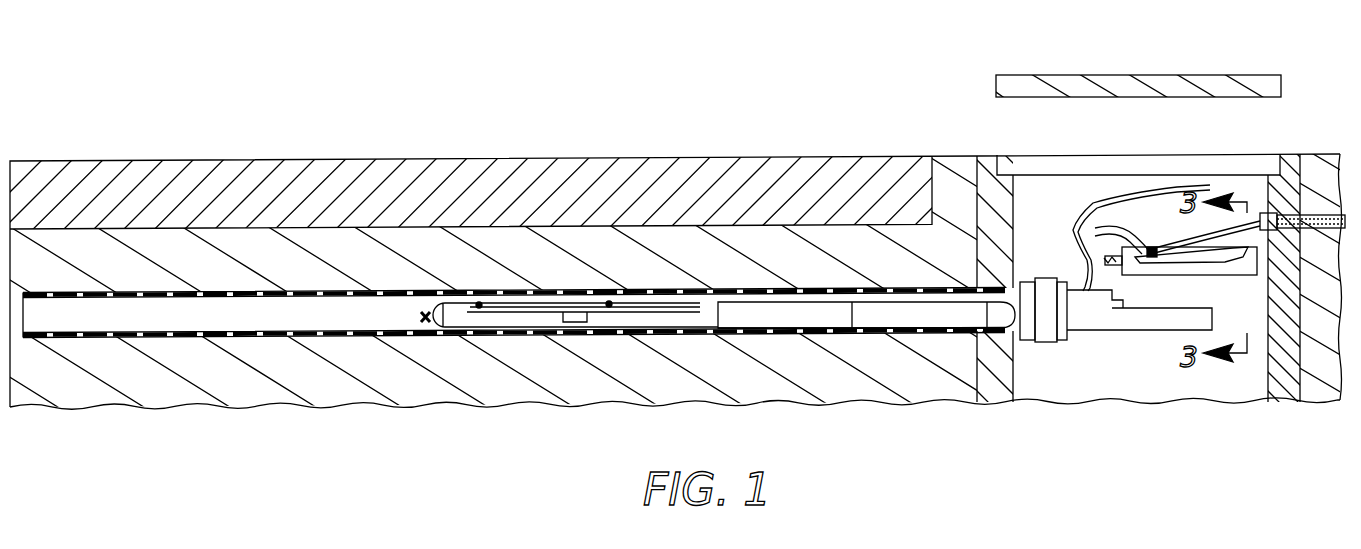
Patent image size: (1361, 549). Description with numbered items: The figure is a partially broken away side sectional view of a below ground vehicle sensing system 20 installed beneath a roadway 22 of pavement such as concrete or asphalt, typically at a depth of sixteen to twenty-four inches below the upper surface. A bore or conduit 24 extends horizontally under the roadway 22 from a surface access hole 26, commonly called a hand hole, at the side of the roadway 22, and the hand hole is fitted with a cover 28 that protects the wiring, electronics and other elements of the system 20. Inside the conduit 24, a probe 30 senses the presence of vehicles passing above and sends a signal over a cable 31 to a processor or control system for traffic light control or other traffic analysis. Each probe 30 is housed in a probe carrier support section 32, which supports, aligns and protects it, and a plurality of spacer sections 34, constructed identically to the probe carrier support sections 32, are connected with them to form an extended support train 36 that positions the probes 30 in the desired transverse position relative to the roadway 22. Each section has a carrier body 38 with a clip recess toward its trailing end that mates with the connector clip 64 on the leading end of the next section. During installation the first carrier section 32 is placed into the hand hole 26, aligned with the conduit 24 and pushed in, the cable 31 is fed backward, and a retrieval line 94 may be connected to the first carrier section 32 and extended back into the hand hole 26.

The vehicle sensing system 20 is at (735, 79).
The roadway 22 is at (489, 157).
The conduit 24 is at (212, 299).
The surface access hole 26 is at (1228, 180).
The cover 28 is at (1208, 77).
The probe 30 is at (610, 305).
The cable 31 is at (1207, 230).
The probe carrier support section 32 is at (598, 322).
The spacer section 34 is at (872, 315).
The support train 36 is at (747, 300).
The carrier body 38 is at (1222, 268).
The connector clip 64 is at (1116, 265).
The retrieval line 94 is at (1143, 187).